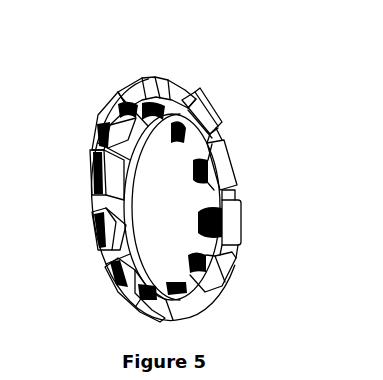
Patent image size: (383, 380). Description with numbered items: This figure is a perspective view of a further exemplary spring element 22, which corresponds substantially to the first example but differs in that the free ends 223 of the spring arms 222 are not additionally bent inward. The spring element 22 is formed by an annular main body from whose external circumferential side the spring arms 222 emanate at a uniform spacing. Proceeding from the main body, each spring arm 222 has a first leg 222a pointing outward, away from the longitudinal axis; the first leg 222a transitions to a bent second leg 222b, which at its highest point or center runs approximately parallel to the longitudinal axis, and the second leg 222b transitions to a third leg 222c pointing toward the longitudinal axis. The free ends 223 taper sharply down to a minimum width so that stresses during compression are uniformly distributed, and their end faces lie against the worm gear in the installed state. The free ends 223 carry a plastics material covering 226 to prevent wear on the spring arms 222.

The spring element 22 is at (177, 169).
The spring arms 222 is at (228, 170).
The first leg 222a is at (113, 222).
The second leg 222b is at (196, 100).
The third leg 222c is at (156, 78).
The free end 223 is at (180, 133).
The plastics material covering 226 is at (213, 283).